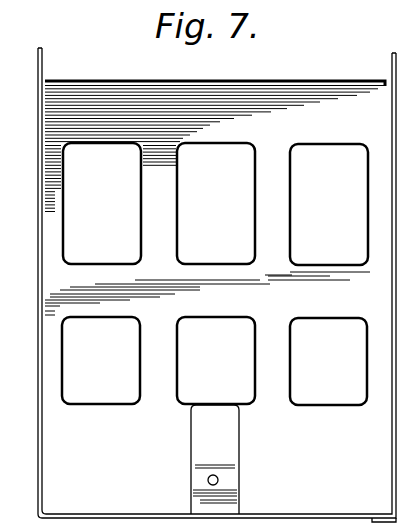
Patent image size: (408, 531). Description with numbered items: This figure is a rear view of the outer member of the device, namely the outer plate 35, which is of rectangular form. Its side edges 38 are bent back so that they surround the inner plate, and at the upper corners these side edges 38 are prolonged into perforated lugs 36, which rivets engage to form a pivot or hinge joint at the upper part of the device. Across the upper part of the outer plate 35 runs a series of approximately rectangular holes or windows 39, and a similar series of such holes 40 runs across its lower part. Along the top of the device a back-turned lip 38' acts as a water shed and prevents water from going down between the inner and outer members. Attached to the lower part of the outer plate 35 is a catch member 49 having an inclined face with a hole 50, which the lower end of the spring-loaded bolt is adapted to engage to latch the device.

The outer plate 35 is at (207, 210).
The perforated lugs 36 is at (393, 65).
The side edges 38 is at (215, 149).
The back-turned lip 38' is at (215, 70).
The rectangular holes or windows 39 is at (215, 204).
The holes 40 is at (214, 361).
The catch member 49 is at (242, 481).
The hole 50 is at (207, 479).